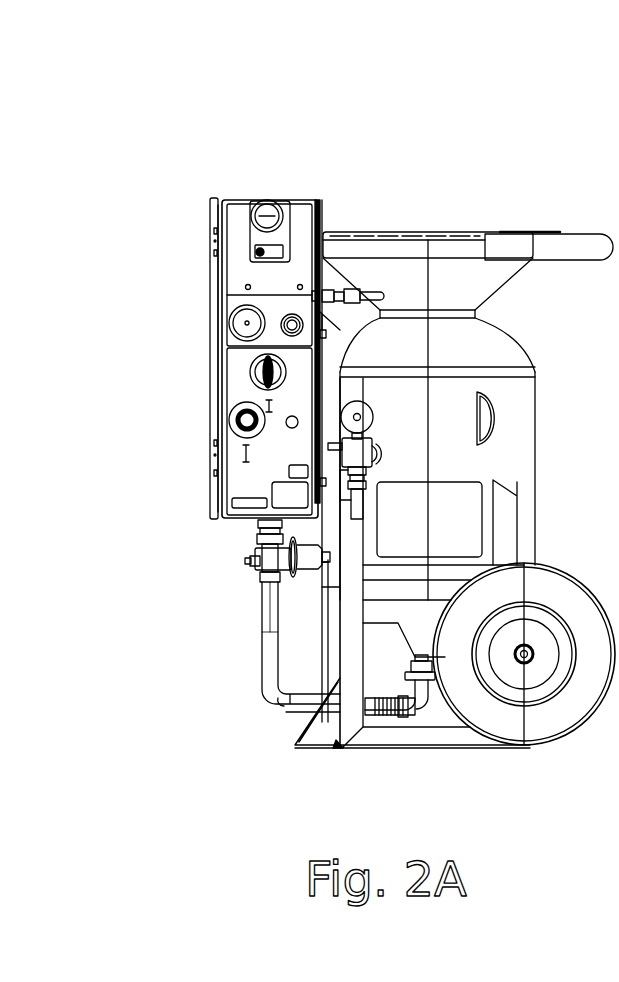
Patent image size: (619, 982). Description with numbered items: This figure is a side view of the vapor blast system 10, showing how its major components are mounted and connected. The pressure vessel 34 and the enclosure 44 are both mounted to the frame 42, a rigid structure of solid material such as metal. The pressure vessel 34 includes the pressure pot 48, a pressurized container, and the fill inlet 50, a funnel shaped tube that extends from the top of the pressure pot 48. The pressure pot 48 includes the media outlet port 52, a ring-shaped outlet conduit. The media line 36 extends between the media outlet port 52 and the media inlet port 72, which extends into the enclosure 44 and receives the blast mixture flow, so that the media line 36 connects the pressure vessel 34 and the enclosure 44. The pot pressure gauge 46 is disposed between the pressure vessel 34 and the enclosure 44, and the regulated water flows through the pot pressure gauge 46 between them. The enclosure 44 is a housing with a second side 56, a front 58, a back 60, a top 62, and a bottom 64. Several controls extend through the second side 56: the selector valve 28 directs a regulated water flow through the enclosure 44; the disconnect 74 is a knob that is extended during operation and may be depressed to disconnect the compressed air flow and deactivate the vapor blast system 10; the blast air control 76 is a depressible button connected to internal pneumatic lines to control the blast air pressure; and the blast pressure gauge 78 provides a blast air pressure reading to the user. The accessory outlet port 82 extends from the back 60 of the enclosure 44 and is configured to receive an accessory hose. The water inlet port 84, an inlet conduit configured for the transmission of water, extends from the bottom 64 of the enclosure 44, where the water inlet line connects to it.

The vapor blast system 10 is at (484, 112).
The enclosure 44 is at (236, 190).
The front 58 is at (212, 240).
The back 60 is at (310, 240).
The top 62 is at (286, 200).
The disconnect 74 is at (267, 212).
The blast pressure gauge 78 is at (238, 320).
The blast air control 76 is at (300, 318).
The bottom 64 is at (233, 520).
The selector valve 28 is at (262, 372).
The second side 56 is at (317, 200).
The pressure vessel 34 is at (519, 326).
The fill inlet 50 is at (470, 243).
The pressure pot 48 is at (515, 458).
The accessory outlet port 82 is at (355, 302).
The pot pressure gauge 46 is at (367, 442).
The media inlet port 72 is at (258, 540).
The water inlet port 84 is at (283, 556).
The media line 36 is at (270, 698).
The frame 42 is at (397, 742).
The media outlet port 52 is at (430, 677).